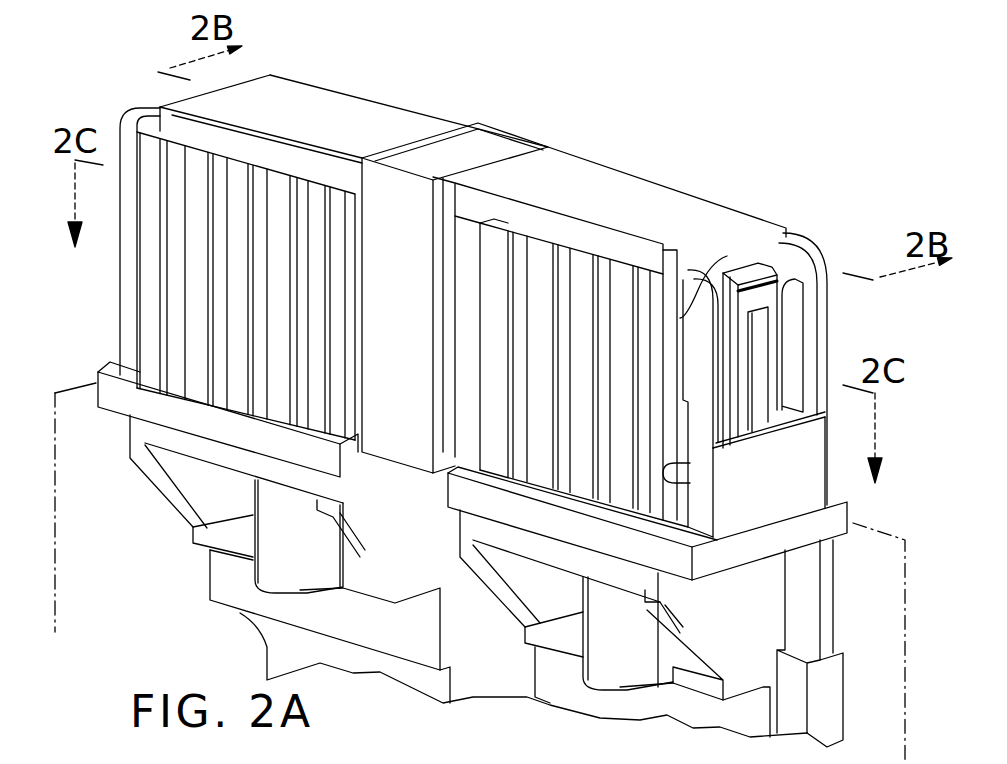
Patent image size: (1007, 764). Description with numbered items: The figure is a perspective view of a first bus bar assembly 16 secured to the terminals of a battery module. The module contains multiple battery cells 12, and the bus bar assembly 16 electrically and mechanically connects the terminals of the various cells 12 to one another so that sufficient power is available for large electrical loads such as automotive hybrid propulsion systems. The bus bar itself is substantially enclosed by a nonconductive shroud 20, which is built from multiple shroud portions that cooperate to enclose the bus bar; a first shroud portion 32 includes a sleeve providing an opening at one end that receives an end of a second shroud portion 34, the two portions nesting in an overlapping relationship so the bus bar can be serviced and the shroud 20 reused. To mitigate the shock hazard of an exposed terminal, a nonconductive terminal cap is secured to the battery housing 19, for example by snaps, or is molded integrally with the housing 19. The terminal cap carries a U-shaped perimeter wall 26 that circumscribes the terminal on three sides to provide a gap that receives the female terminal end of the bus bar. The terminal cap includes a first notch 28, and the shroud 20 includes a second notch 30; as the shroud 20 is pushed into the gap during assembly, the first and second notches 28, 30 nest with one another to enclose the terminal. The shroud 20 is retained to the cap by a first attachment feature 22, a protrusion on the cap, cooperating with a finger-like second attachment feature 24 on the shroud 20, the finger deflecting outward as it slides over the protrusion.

The battery cell 12 is at (104, 362).
The bus bar assembly 16 is at (660, 90).
The battery housing 19 is at (73, 380).
The shroud 20 is at (385, 93).
The first attachment feature 22 is at (757, 350).
The second attachment feature 24 is at (786, 264).
The U-shaped perimeter wall 26 is at (610, 283).
The first notch 28 is at (706, 268).
The second notch 30 is at (716, 499).
The first shroud portion 32 is at (500, 140).
The second shroud portion 34 is at (634, 198).